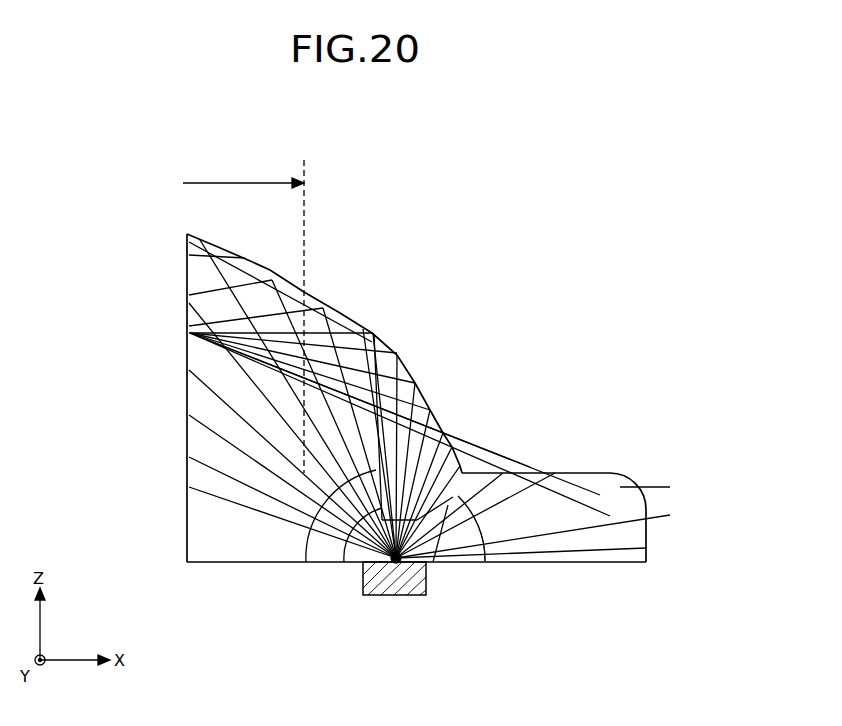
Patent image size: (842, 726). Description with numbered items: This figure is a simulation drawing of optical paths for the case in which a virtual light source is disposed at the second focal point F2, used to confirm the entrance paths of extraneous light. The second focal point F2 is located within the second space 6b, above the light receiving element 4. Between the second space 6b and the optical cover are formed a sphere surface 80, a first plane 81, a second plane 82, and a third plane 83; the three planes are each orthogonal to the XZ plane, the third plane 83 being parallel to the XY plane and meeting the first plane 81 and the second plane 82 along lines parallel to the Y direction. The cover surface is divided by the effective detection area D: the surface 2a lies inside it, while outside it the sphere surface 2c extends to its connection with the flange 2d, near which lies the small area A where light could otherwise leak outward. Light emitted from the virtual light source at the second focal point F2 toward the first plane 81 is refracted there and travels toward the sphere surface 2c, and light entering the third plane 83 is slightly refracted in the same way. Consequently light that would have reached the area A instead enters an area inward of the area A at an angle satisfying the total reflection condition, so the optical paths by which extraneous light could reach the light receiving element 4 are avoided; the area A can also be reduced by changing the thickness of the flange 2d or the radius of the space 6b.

The first lens surface 2a is at (240, 256).
The sphere surface 2c is at (398, 357).
The flange 2d is at (573, 490).
The area A is at (462, 440).
The effective detection area D is at (243, 315).
The second space 6b is at (310, 548).
The sphere surface 80 is at (300, 548).
The second plane 82 is at (345, 548).
The third plane 83 is at (445, 560).
The first plane 81 is at (487, 556).
The second focal point F2 is at (381, 598).
The light receiving element 4 is at (418, 598).